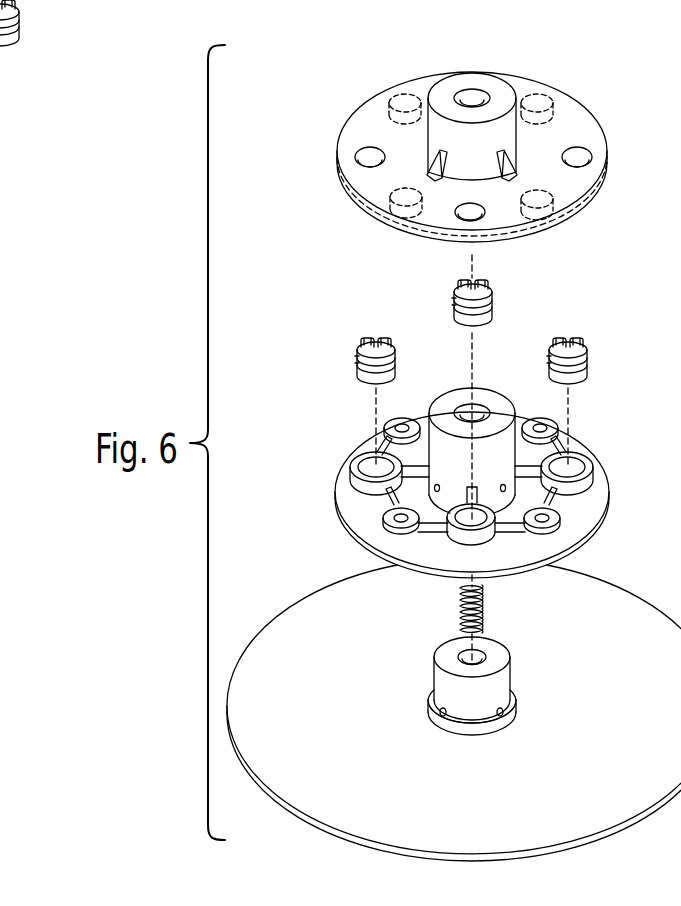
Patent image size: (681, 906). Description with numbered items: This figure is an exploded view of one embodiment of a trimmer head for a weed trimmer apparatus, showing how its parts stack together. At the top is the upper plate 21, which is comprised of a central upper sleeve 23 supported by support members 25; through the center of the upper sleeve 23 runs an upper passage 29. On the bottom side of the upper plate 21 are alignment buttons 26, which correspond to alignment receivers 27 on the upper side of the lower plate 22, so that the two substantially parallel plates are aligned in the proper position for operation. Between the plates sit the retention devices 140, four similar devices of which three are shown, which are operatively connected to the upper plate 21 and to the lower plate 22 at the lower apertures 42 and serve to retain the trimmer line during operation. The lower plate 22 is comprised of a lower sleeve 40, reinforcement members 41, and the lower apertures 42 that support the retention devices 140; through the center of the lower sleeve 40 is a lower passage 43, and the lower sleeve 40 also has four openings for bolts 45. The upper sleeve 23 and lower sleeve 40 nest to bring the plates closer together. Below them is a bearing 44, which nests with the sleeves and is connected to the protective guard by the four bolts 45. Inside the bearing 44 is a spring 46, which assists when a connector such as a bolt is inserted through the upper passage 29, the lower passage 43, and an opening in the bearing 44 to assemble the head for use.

The upper plate 21 is at (570, 120).
The lower plate 22 is at (380, 530).
The upper sleeve 23 is at (448, 84).
The support members 25 is at (520, 165).
The alignment buttons 26 is at (548, 192).
The alignment receivers 27 is at (552, 427).
The upper passage 29 is at (473, 97).
The lower sleeve 40 is at (527, 407).
The reinforcement members 41 is at (527, 480).
The lower apertures 42 is at (577, 463).
The lower passage 43 is at (463, 412).
The bearing 44 is at (507, 670).
The bolts 45 is at (437, 488).
The spring 46 is at (483, 610).
The retention devices 140 is at (492, 303).